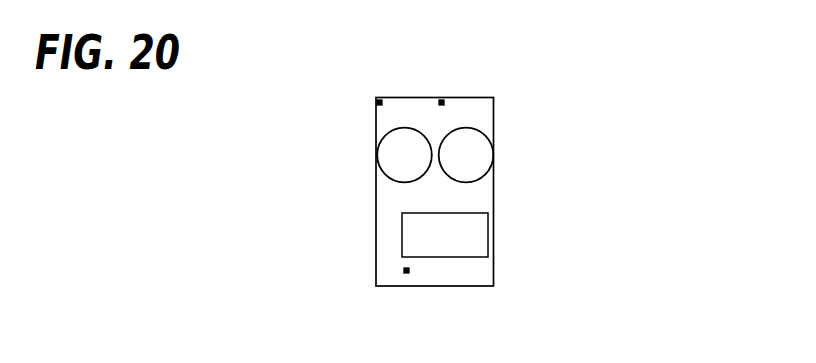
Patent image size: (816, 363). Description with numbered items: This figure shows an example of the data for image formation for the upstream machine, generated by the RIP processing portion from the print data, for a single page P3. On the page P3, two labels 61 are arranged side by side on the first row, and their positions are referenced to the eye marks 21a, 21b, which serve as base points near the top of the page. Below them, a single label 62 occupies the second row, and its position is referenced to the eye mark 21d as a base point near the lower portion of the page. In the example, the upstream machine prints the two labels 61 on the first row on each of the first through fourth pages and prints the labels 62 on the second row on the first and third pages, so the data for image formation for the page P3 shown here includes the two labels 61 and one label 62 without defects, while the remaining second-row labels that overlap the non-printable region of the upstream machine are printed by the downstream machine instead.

The page p3 P3 is at (485, 97).
The eye mark 21a is at (380, 100).
The eye mark 21b is at (441, 100).
The eye mark 21d is at (407, 275).
The label 61 is at (387, 157).
The label 62 is at (470, 258).